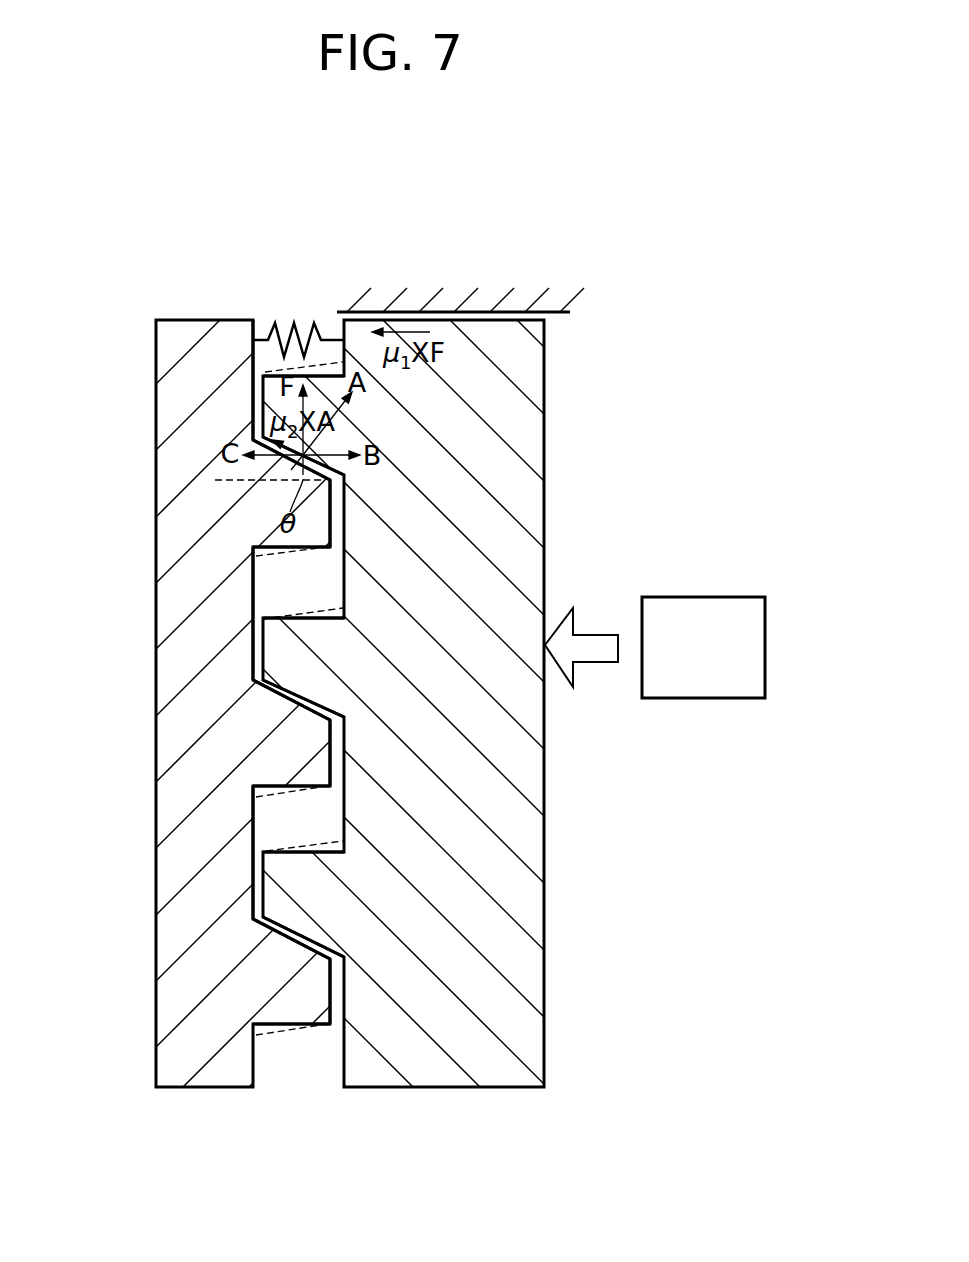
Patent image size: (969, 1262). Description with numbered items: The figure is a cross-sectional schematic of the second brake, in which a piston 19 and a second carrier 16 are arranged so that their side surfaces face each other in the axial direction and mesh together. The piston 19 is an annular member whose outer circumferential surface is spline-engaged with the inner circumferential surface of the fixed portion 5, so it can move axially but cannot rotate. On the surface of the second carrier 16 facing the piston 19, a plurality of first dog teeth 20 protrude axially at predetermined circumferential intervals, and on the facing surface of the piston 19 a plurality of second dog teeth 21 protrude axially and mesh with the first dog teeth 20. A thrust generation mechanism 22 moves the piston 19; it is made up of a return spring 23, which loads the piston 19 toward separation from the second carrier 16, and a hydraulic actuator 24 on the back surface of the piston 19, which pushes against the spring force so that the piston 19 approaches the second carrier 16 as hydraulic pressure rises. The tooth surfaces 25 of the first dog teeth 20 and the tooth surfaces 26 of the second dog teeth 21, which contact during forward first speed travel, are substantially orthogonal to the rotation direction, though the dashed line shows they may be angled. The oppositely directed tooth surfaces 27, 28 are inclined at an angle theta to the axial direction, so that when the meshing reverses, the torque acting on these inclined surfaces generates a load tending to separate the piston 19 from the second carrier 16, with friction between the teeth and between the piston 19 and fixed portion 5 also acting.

The fixed portion 5 is at (485, 300).
The second carrier 16 is at (160, 622).
The piston 19 is at (545, 392).
The first dog teeth 20 is at (302, 530).
The second dog teeth 21 is at (310, 368).
The thrust generation mechanism 22 is at (623, 168).
The return spring 23 is at (322, 330).
The hydraulic actuator 24 is at (695, 597).
The tooth surfaces of first dog teeth 25 is at (272, 552).
The tooth surfaces of second dog teeth 26 is at (298, 360).
The inclined tooth surfaces of first dog teeth 27 is at (282, 468).
The inclined tooth surfaces of second dog teeth 28 is at (320, 478).